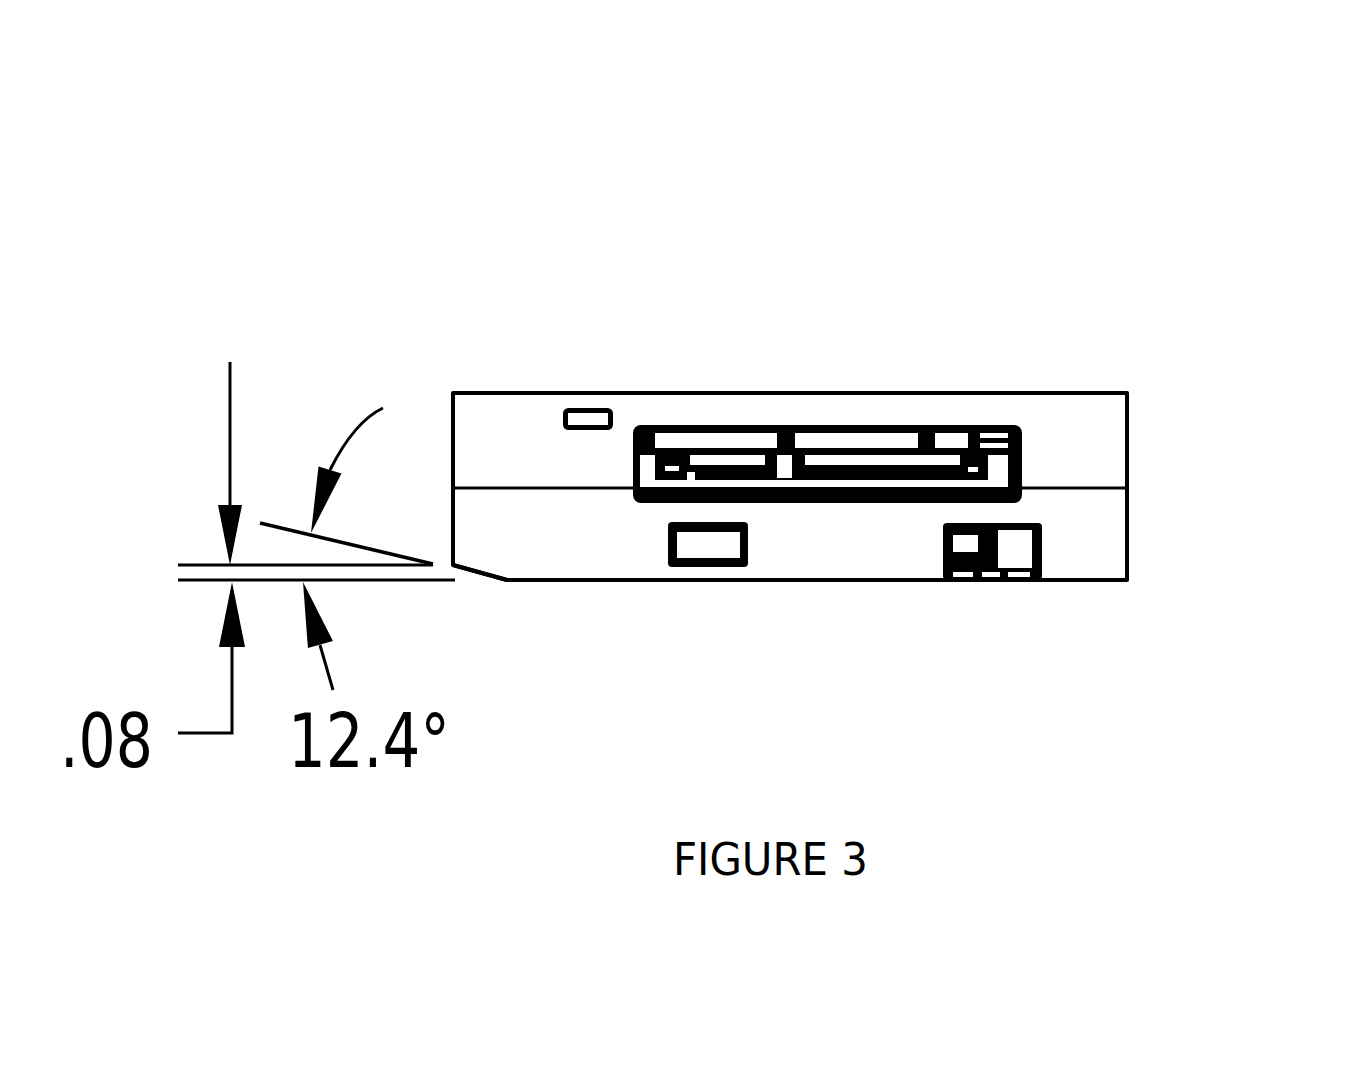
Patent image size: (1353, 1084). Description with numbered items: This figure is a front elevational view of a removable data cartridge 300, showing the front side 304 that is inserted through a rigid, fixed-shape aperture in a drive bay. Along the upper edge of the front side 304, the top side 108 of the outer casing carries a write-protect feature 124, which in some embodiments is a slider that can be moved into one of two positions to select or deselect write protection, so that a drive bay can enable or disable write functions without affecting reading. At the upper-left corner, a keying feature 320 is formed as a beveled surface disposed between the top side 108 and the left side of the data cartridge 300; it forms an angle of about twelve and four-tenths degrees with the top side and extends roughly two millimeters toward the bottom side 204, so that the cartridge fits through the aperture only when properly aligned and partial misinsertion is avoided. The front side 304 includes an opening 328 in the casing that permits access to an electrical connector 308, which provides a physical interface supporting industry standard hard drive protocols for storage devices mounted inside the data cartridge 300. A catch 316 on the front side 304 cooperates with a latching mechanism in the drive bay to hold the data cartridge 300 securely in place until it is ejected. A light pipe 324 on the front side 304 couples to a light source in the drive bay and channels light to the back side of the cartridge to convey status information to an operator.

The data cartridge 300 is at (540, 248).
The bottom side 204 is at (525, 391).
The front side 304 is at (1100, 415).
The light pipe 324 is at (590, 406).
The opening 328 is at (795, 412).
The electrical connector 308 is at (870, 465).
The catch 316 is at (717, 545).
The write-protect feature 124 is at (1010, 580).
The top side 108 is at (823, 580).
The keying feature 320 is at (478, 583).